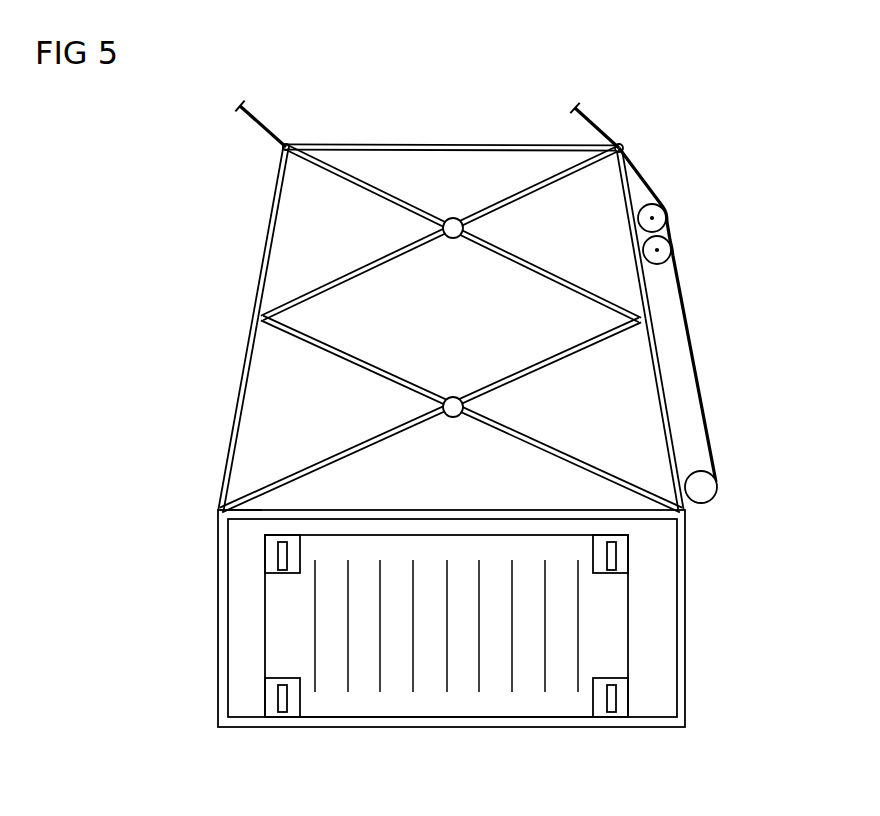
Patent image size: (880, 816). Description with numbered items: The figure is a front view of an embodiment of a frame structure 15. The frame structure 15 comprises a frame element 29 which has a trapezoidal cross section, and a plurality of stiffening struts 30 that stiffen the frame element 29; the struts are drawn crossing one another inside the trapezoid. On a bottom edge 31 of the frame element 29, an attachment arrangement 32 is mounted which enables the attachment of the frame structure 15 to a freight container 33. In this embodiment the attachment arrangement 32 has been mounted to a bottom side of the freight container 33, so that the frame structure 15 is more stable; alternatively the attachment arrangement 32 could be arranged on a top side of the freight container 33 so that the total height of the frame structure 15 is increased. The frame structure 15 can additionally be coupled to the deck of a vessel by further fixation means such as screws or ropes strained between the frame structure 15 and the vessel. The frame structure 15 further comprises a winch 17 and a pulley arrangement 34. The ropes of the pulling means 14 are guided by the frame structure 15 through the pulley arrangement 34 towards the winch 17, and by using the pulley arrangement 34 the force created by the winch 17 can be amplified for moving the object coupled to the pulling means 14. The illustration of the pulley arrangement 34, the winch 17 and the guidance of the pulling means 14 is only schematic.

The pulling means 14 is at (262, 122).
The frame structure 15 is at (736, 135).
The winch 17 is at (718, 486).
The frame element 29 is at (242, 372).
The stiffening struts 30 is at (367, 356).
The bottom edge 31 is at (253, 513).
The attachment arrangement 32 is at (690, 586).
The freight container 33 is at (608, 630).
The pulley arrangement 34 is at (675, 229).